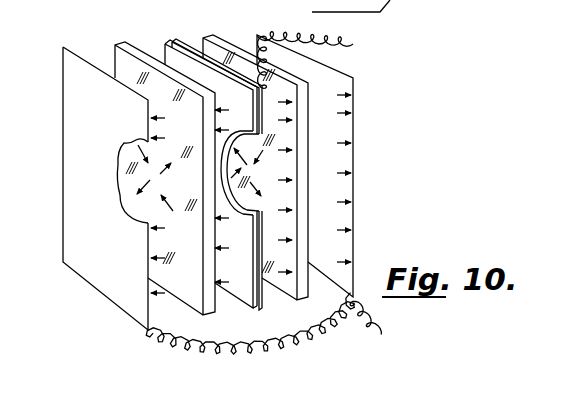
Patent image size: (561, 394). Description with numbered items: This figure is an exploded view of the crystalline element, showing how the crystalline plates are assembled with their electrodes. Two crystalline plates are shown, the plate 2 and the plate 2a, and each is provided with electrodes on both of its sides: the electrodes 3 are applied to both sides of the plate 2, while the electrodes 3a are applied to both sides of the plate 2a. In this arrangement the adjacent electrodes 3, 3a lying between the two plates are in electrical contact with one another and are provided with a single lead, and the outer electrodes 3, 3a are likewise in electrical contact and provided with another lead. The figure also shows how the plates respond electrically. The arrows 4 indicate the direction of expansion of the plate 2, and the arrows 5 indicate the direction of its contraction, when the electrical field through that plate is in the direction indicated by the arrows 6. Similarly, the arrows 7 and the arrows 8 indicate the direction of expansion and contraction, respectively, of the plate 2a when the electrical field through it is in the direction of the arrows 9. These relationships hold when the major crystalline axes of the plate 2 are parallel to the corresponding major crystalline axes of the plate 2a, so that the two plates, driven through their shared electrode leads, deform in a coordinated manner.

The plate 2 is at (124, 45).
The plate 2a is at (214, 37).
The electrodes 3 is at (68, 108).
The electrodes 3a is at (175, 40).
The arrows 4 is at (158, 186).
The arrows 5 is at (162, 178).
The arrows 6 is at (195, 200).
The arrows 7 is at (255, 166).
The arrows 8 is at (263, 161).
The arrows 9 is at (341, 178).